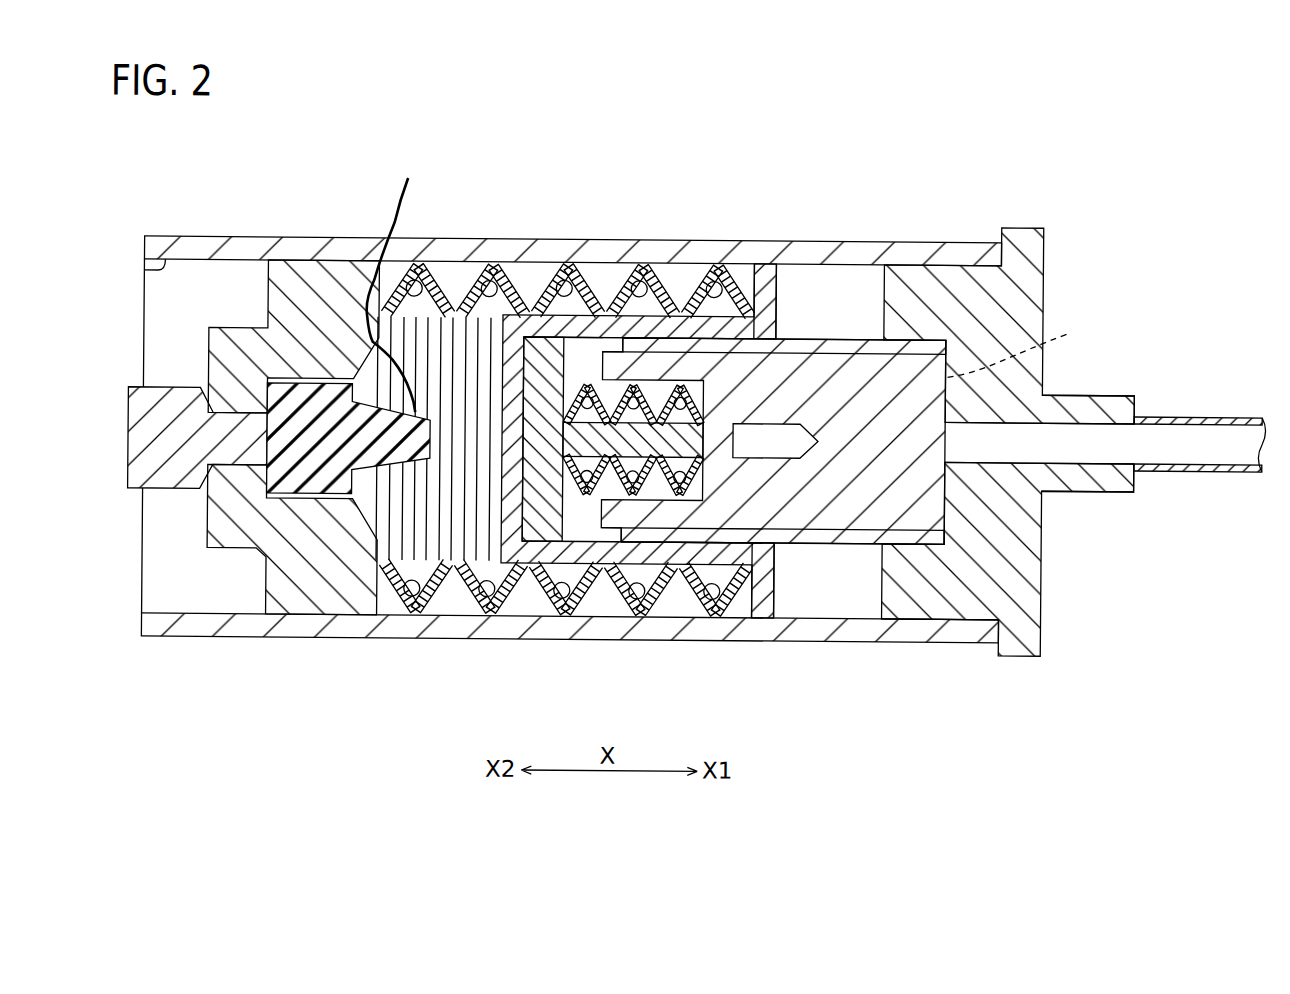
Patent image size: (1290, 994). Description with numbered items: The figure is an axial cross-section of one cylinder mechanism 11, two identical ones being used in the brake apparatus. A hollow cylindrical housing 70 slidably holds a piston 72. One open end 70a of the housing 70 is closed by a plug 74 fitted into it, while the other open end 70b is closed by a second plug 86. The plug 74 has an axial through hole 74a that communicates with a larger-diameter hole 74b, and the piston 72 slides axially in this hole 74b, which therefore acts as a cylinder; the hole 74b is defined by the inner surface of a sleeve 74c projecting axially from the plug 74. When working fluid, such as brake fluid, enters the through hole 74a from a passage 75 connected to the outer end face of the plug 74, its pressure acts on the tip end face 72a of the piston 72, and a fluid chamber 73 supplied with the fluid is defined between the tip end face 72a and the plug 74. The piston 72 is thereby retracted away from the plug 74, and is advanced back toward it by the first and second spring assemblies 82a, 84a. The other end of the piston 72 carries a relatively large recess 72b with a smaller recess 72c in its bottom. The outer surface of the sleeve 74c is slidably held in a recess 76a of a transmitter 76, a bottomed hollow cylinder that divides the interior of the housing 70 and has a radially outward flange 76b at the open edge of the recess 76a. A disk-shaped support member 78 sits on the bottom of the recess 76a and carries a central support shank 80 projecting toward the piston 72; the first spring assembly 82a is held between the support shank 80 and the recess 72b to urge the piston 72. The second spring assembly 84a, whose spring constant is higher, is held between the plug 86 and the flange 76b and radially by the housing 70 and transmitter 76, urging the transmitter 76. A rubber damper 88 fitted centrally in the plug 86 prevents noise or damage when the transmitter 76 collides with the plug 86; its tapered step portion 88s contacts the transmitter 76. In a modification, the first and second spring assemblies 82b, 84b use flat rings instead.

The cylinder mechanism 11 is at (1166, 164).
The housing 70 is at (241, 255).
The open end 70a is at (955, 597).
The another open end 70b is at (143, 272).
The piston 72 is at (917, 470).
The tip end face 72a is at (945, 506).
The recess 72b is at (668, 395).
The recess 72c is at (779, 443).
The fluid chamber 73 is at (1024, 348).
The plug 74 is at (977, 299).
The through hole 74a is at (1070, 430).
The hole 74b is at (830, 511).
The sleeve 74c is at (843, 348).
The passage 75 is at (1177, 413).
The transmitter 76 is at (499, 372).
The recess 76a is at (578, 349).
The flange 76b is at (762, 297).
The support member 78 is at (540, 369).
The support shank 80 is at (680, 432).
The first spring assembly 82a is at (610, 493).
The first spring assembly 82b is at (632, 584).
The second spring assembly 84a is at (447, 602).
The second spring assembly 84b is at (565, 623).
The plug 86 is at (302, 291).
The damper 88 is at (326, 397).
The step portion 88s is at (393, 278).